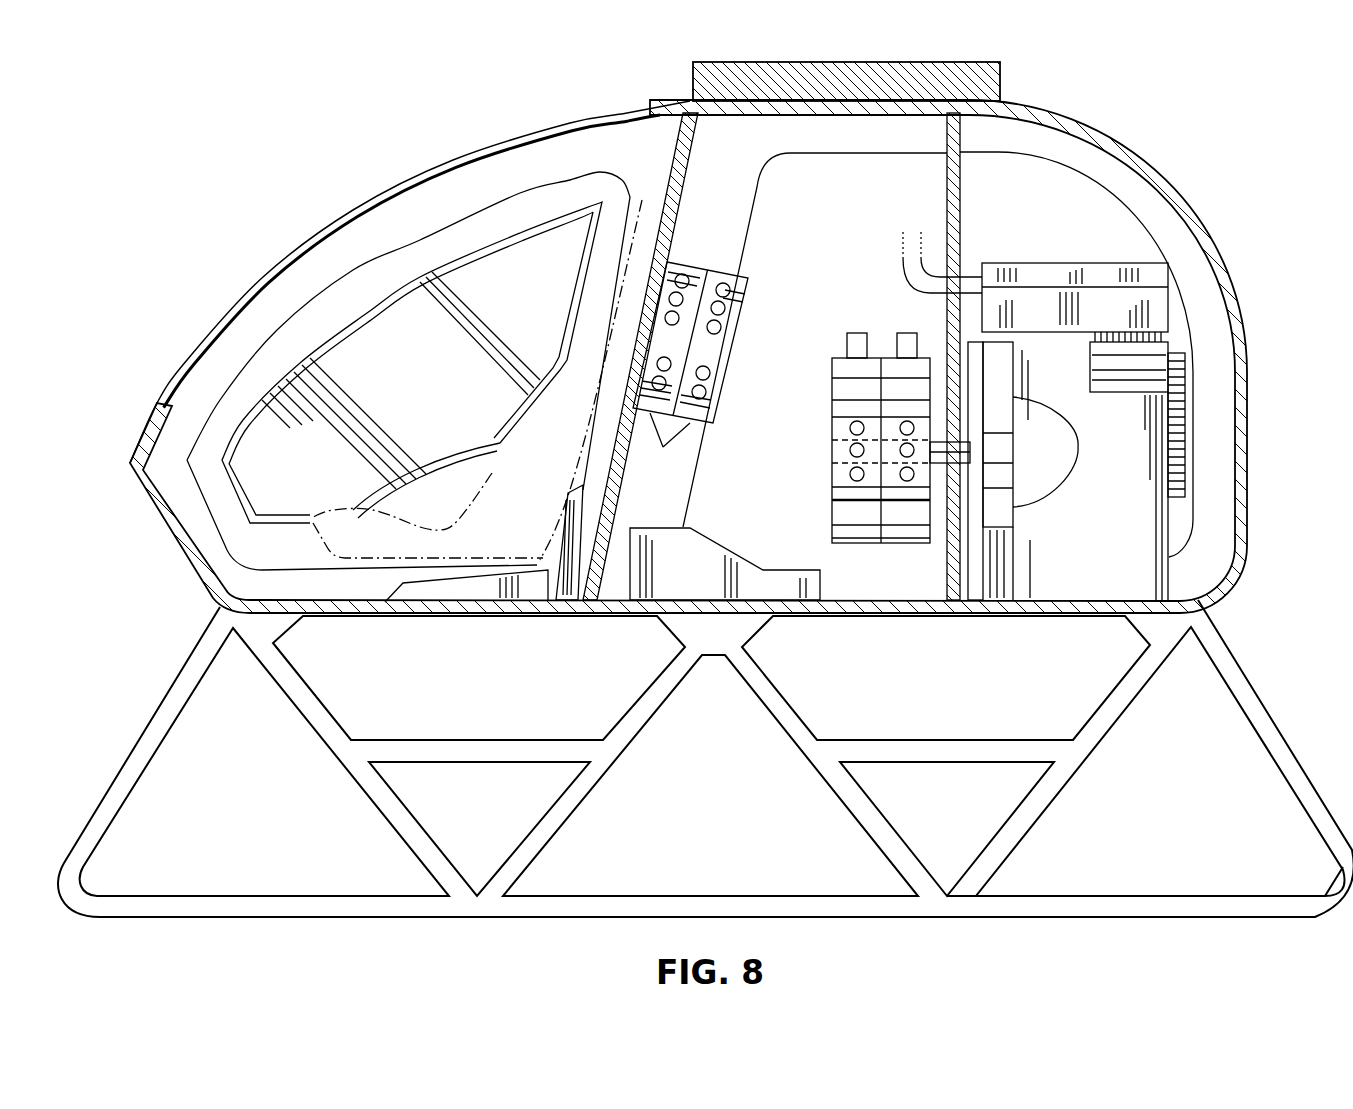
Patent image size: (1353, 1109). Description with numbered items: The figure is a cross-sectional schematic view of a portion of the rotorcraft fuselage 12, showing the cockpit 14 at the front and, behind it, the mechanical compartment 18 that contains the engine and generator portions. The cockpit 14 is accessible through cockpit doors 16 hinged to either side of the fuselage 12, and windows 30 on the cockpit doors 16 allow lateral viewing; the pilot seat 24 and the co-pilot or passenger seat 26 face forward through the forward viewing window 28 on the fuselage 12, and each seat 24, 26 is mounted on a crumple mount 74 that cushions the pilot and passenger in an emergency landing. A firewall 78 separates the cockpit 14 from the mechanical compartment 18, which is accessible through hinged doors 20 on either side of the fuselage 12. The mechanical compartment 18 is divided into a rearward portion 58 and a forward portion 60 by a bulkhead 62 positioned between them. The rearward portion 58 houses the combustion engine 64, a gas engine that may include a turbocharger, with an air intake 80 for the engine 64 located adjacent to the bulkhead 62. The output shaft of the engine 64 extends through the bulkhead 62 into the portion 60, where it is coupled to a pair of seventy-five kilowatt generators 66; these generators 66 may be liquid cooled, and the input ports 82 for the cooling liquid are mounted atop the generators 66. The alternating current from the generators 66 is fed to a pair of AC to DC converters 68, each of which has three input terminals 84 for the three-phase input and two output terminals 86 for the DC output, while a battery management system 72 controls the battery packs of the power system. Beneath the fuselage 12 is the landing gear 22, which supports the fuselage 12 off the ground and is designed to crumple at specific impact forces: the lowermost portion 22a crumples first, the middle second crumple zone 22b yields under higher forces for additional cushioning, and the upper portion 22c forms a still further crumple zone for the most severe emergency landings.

The fuselage 12 is at (688, 337).
The cockpit 14 is at (417, 369).
The cockpit doors 16 is at (601, 171).
The mechanical compartment 18 is at (1033, 362).
The hinged doors 20 is at (790, 151).
The landing gear 22 is at (694, 758).
The lowermost portion of the landing gear 22a is at (256, 896).
The middle second crumple zone 22b is at (436, 834).
The upper portion of the landing gear 22c is at (781, 696).
The pilot seat 24 is at (477, 380).
The co-pilot or passenger seat 26 is at (499, 440).
The forward viewing window 28 is at (276, 268).
The windows 30 is at (382, 389).
The rearward portion 58 is at (1028, 376).
The portion of the mechanical compartment 60 is at (800, 359).
The bulkhead 62 is at (962, 218).
The combustion engine 64 is at (1127, 494).
The generators 66 is at (888, 452).
The AC to DC converters 68 is at (665, 449).
The battery management system 72 is at (707, 536).
The crumple mount 74 is at (566, 548).
The firewall 78 is at (686, 178).
The air intake 80 is at (906, 270).
The input ports 82 is at (900, 333).
The input terminals 84 is at (703, 355).
The output terminals 86 is at (705, 366).